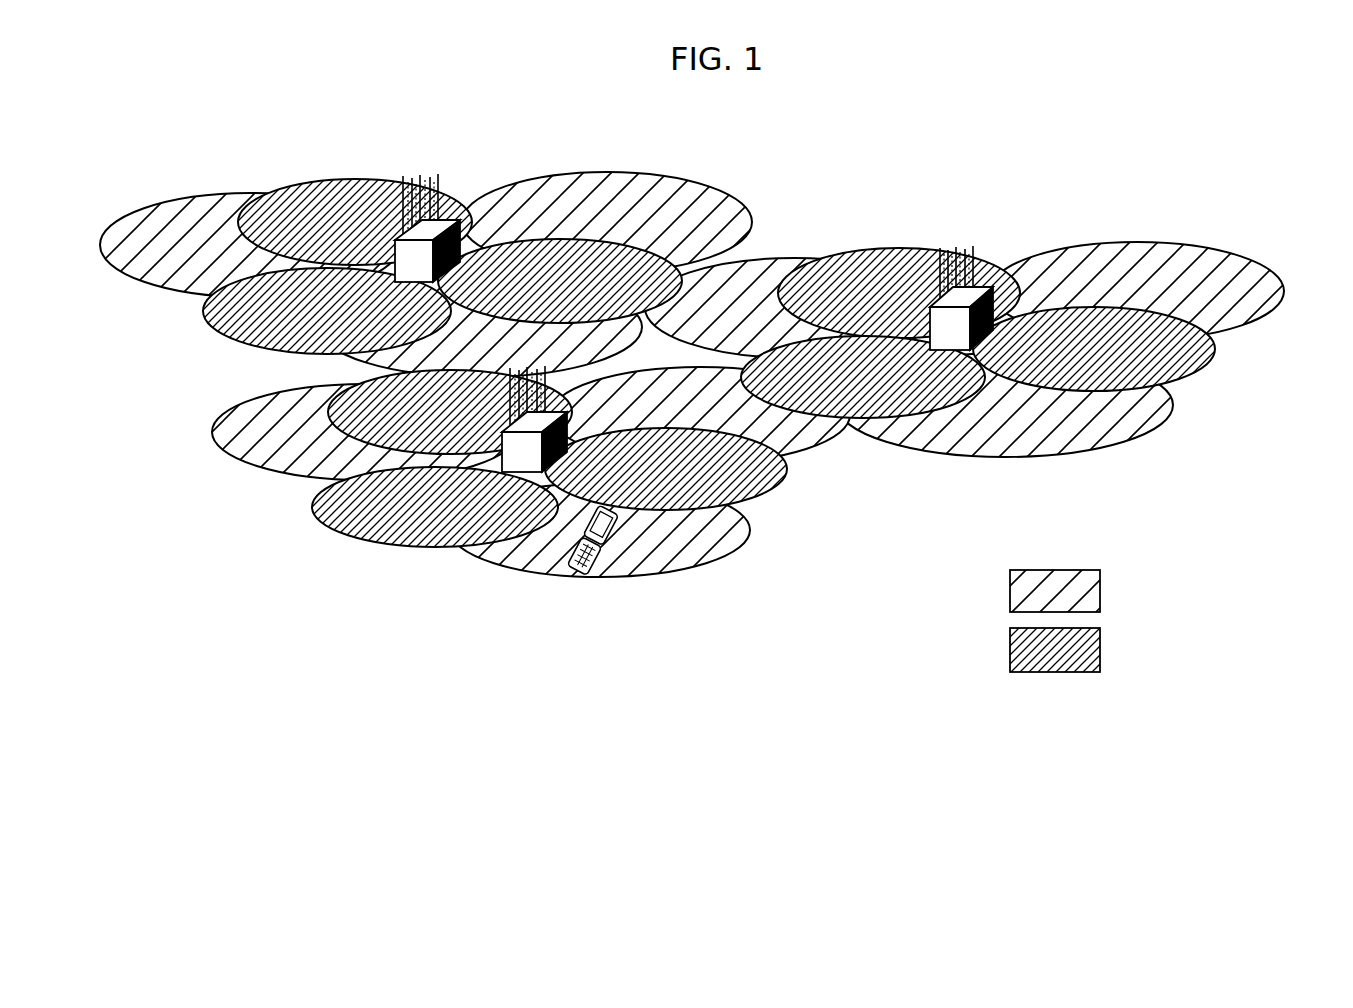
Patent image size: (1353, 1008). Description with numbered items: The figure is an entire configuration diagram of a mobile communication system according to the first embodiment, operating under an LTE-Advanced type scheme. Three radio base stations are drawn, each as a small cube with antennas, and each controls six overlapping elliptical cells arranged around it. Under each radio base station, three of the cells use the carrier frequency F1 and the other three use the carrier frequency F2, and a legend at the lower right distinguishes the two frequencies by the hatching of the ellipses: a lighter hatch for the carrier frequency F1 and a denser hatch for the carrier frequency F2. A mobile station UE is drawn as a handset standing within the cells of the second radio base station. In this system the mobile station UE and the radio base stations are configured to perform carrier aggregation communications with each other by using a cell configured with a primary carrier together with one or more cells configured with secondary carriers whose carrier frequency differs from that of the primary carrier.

The mobile station UE is at (573, 565).
The carrier frequency F1 is at (1077, 591).
The carrier frequency F2 is at (1077, 650).